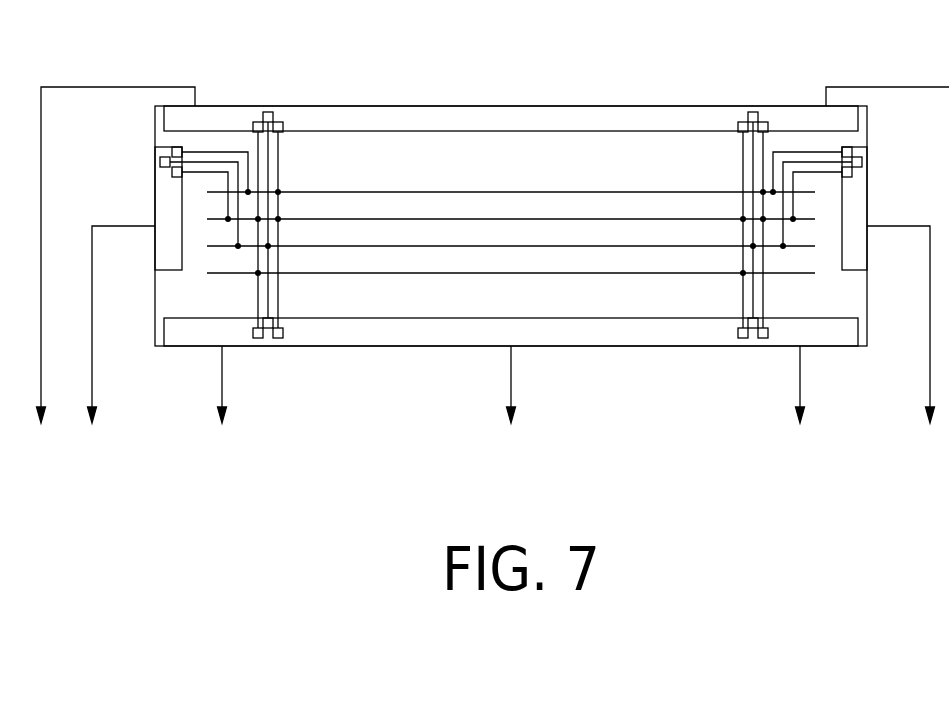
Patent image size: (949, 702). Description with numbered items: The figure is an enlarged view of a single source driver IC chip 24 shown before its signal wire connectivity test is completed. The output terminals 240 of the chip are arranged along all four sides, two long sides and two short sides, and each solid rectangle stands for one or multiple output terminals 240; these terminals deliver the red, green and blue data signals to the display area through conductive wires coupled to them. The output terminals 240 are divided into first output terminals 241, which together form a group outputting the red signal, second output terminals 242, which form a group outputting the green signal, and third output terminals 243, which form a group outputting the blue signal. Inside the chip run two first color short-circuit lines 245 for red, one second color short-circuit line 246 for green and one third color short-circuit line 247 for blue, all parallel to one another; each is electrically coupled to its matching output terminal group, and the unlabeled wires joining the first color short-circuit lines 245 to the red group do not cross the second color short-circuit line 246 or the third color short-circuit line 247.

The source driver IC chip 24 is at (530, 39).
The output terminals 240 is at (225, 110).
The first output terminals 241 is at (770, 127).
The second output terminals 242 is at (753, 112).
The third output terminals 243 is at (742, 123).
The first color short-circuit lines 245 is at (393, 273).
The second color short-circuit line 246 is at (465, 247).
The third color short-circuit line 247 is at (530, 219).